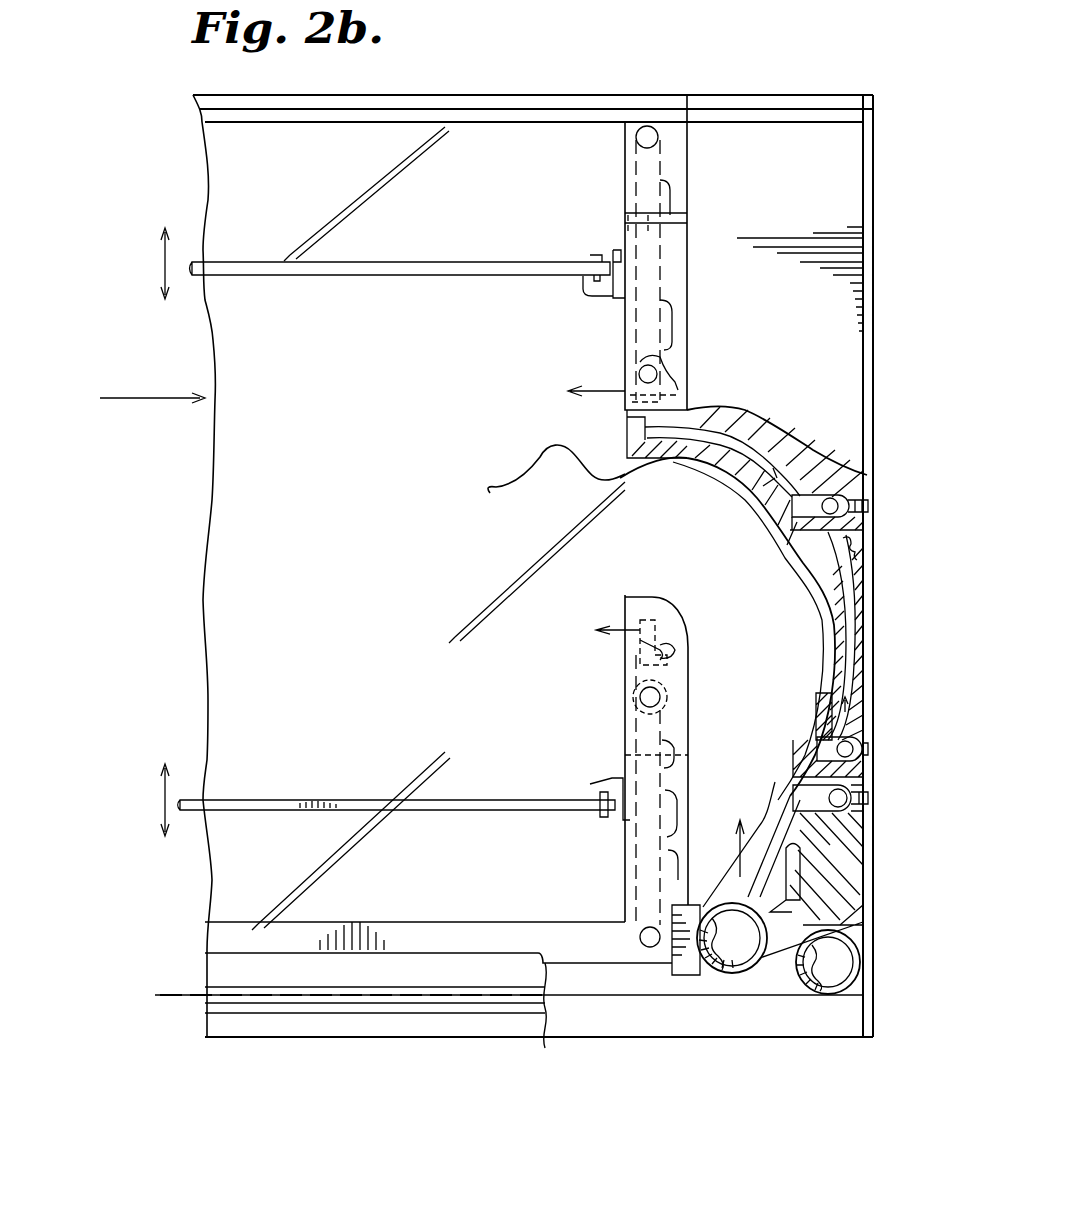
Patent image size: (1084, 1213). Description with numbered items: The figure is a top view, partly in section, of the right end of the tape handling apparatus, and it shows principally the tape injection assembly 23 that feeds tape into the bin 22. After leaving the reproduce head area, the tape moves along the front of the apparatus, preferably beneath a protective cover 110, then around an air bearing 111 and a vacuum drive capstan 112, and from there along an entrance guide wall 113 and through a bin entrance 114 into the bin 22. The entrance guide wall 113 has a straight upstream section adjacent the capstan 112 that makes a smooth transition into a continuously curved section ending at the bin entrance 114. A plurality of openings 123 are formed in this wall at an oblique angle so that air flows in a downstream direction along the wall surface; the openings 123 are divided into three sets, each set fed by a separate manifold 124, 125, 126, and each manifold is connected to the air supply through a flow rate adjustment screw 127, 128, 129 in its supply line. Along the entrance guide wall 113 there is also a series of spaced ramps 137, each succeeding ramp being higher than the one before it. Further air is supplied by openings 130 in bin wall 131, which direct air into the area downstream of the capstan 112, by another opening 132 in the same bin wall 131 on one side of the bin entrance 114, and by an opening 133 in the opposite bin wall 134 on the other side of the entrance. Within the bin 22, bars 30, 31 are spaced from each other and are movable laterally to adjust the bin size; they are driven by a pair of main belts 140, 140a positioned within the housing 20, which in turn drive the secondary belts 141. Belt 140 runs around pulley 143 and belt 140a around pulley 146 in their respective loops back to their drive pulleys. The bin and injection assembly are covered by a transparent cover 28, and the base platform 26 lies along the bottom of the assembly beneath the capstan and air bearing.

The housing 20 is at (878, 886).
The bin 22 is at (123, 391).
The tape injection assembly 23 is at (906, 354).
The base platform 26 is at (656, 998).
The cover 28 is at (443, 201).
The bar 30 is at (258, 275).
The bar 31 is at (245, 800).
The protective cover 110 is at (343, 1008).
The air bearing 111 is at (845, 963).
The vacuum drive capstan 112 is at (763, 977).
The entrance guide wall 113 is at (846, 667).
The bin entrance 114 is at (615, 567).
The openings 123 is at (704, 455).
The manifold 124 is at (782, 820).
The manifold 125 is at (850, 612).
The manifold 126 is at (747, 462).
The flow rate adjustment screw 127 is at (875, 800).
The flow rate adjustment screw 128 is at (875, 750).
The flow rate adjustment screw 129 is at (873, 508).
The openings 130 is at (696, 780).
The bin wall 131 is at (625, 755).
The opening 132 is at (630, 649).
The opening 133 is at (628, 398).
The bin wall 134 is at (625, 222).
The ramps 137 is at (805, 572).
The main belt 140 is at (690, 351).
The main belt 140a is at (650, 697).
The secondary belts 141 is at (660, 172).
The pulley 143 is at (652, 385).
The pulley 146 is at (635, 700).